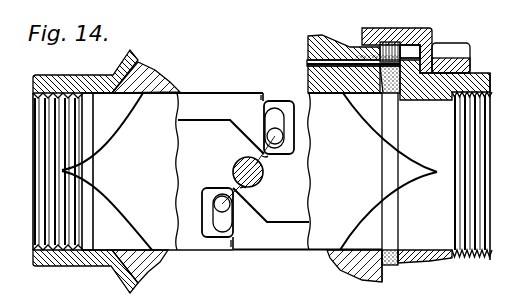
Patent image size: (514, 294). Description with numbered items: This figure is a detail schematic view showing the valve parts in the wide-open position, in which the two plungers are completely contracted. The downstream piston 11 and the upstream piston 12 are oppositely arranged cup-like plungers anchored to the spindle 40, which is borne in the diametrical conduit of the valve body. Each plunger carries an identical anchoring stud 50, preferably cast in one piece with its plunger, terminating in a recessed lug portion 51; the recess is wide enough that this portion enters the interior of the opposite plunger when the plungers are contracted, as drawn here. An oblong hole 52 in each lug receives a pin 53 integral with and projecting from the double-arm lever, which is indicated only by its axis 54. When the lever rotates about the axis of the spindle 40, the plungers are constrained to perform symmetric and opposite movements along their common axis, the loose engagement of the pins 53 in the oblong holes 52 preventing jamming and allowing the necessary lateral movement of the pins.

The downstream piston 11 is at (362, 155).
The upstream piston 12 is at (148, 171).
The spindle 40 is at (241, 164).
The anchoring stud 50 is at (243, 171).
The recessed lug portion 51 is at (287, 98).
The oblong hole 52 is at (267, 100).
The pin 53 is at (279, 138).
The axis of the double-arm lever 54 is at (271, 156).